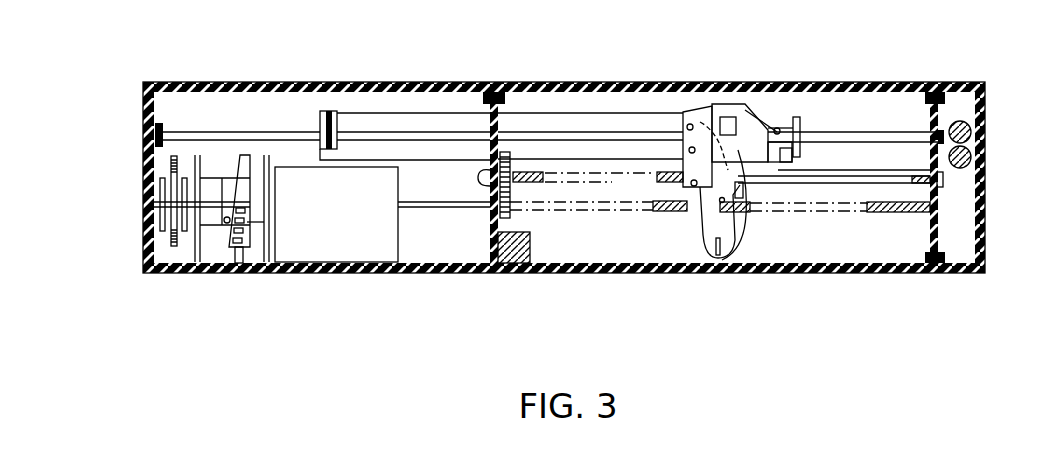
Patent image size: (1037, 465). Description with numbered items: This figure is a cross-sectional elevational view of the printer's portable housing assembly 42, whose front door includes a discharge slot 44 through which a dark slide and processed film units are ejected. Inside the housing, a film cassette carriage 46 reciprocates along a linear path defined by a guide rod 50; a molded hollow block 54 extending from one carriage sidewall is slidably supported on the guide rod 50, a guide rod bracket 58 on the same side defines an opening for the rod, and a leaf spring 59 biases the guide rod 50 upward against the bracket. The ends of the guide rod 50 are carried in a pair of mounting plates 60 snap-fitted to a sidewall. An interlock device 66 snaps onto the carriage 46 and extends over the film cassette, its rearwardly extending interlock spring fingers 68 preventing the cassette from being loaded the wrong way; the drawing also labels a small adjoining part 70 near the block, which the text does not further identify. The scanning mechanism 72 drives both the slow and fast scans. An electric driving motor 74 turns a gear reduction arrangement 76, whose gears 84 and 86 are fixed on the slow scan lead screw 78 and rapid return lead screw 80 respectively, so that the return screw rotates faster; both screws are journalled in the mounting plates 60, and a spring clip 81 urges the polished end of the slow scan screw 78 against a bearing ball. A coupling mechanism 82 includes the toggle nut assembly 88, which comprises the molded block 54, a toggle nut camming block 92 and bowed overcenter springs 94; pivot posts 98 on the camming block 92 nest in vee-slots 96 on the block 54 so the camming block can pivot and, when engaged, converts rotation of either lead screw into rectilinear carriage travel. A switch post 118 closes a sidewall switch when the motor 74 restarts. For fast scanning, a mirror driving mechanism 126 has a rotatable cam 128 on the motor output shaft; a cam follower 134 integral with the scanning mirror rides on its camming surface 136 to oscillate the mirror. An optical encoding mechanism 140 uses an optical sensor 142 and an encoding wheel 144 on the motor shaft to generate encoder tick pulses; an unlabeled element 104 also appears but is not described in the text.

The housing assembly 42 is at (237, 80).
The discharge slot 44 is at (980, 150).
The film cassette carriage 46 is at (378, 128).
The guide rod 50 is at (226, 132).
The molded hollow block 54 is at (748, 116).
The guide rod bracket 58 is at (320, 112).
The leaf spring 59 is at (330, 150).
The mounting plates 60 is at (930, 233).
The interlock device 66 is at (724, 104).
The interlock spring fingers 68 is at (688, 108).
The bracket 70 is at (780, 122).
The scanning mechanism 72 is at (279, 238).
The electric driving motor 74 is at (398, 238).
The gear reduction arrangement 76 is at (512, 218).
The slow scan lead screw 78 is at (860, 176).
The rapid return lead screw 80 is at (840, 212).
The spring clip 81 is at (943, 180).
The coupling mechanism 82 is at (648, 266).
The gear 84 is at (505, 152).
The gear 86 is at (490, 222).
The toggle nut assembly 88 is at (712, 220).
The toggle nut camming block 92 is at (702, 258).
The bowed overcenter springs 94 is at (745, 190).
The vee-slots 96 is at (696, 186).
The pivot posts 98 is at (708, 221).
The pin 104 is at (686, 127).
The switch post 118 is at (683, 150).
The mirror driving mechanism 126 is at (243, 250).
The rotatable cam 128 is at (250, 156).
The cam follower 134 is at (225, 223).
The camming surface 136 is at (236, 168).
The optical encoding mechanism 140 is at (175, 153).
The optical sensor 142 is at (145, 215).
The encoding wheel 144 is at (170, 262).